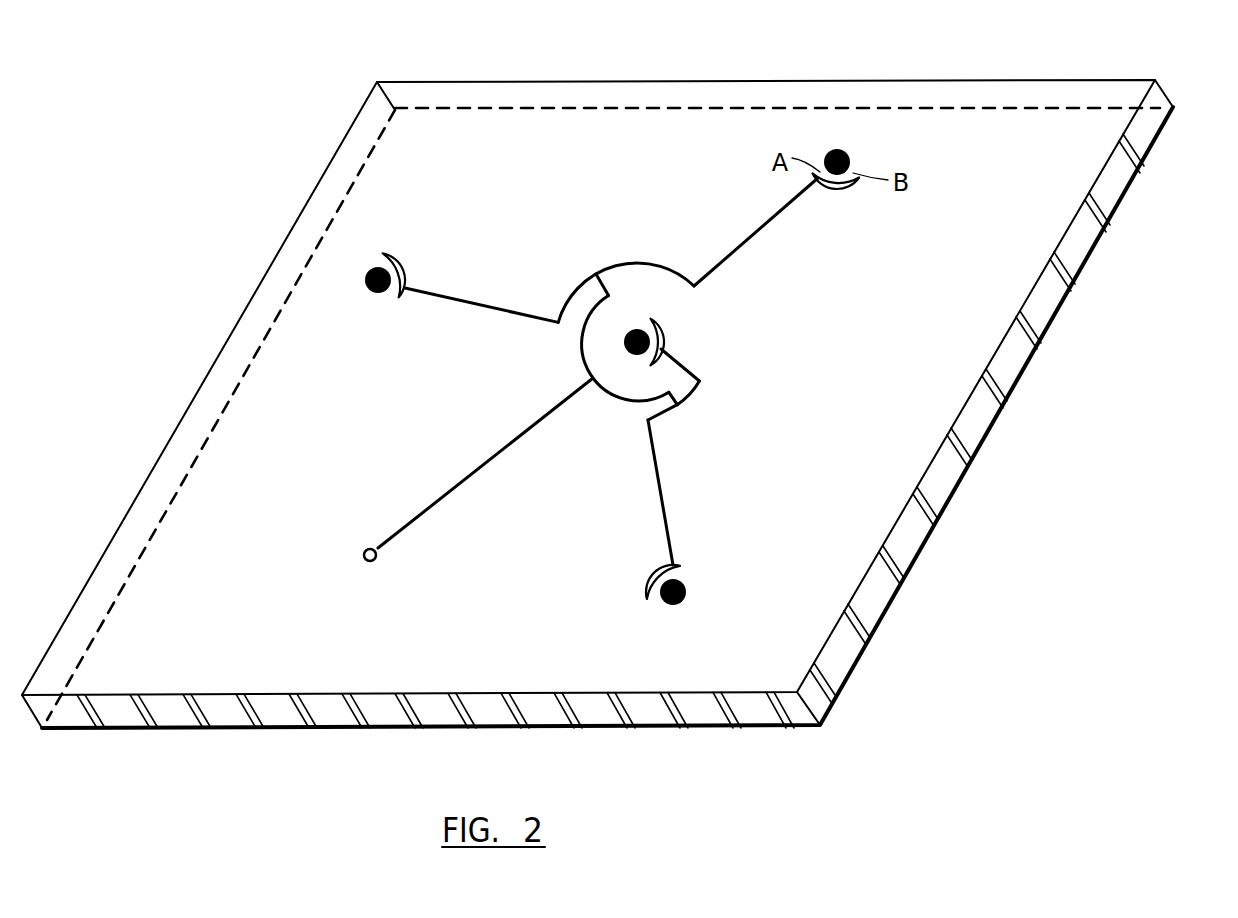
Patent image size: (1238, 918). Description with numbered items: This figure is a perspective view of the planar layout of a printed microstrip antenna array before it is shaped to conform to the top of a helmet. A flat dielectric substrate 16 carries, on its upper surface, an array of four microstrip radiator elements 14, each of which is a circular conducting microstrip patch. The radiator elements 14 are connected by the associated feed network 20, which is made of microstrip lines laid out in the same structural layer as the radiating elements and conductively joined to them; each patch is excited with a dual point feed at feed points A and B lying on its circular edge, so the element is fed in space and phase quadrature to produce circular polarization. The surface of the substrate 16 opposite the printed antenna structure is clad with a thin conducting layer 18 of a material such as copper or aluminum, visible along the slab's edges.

The microstrip radiator element 14 is at (370, 293).
The dielectric substrate 16 is at (1163, 90).
The conducting layer 18 is at (890, 604).
The feed network 20 is at (664, 503).